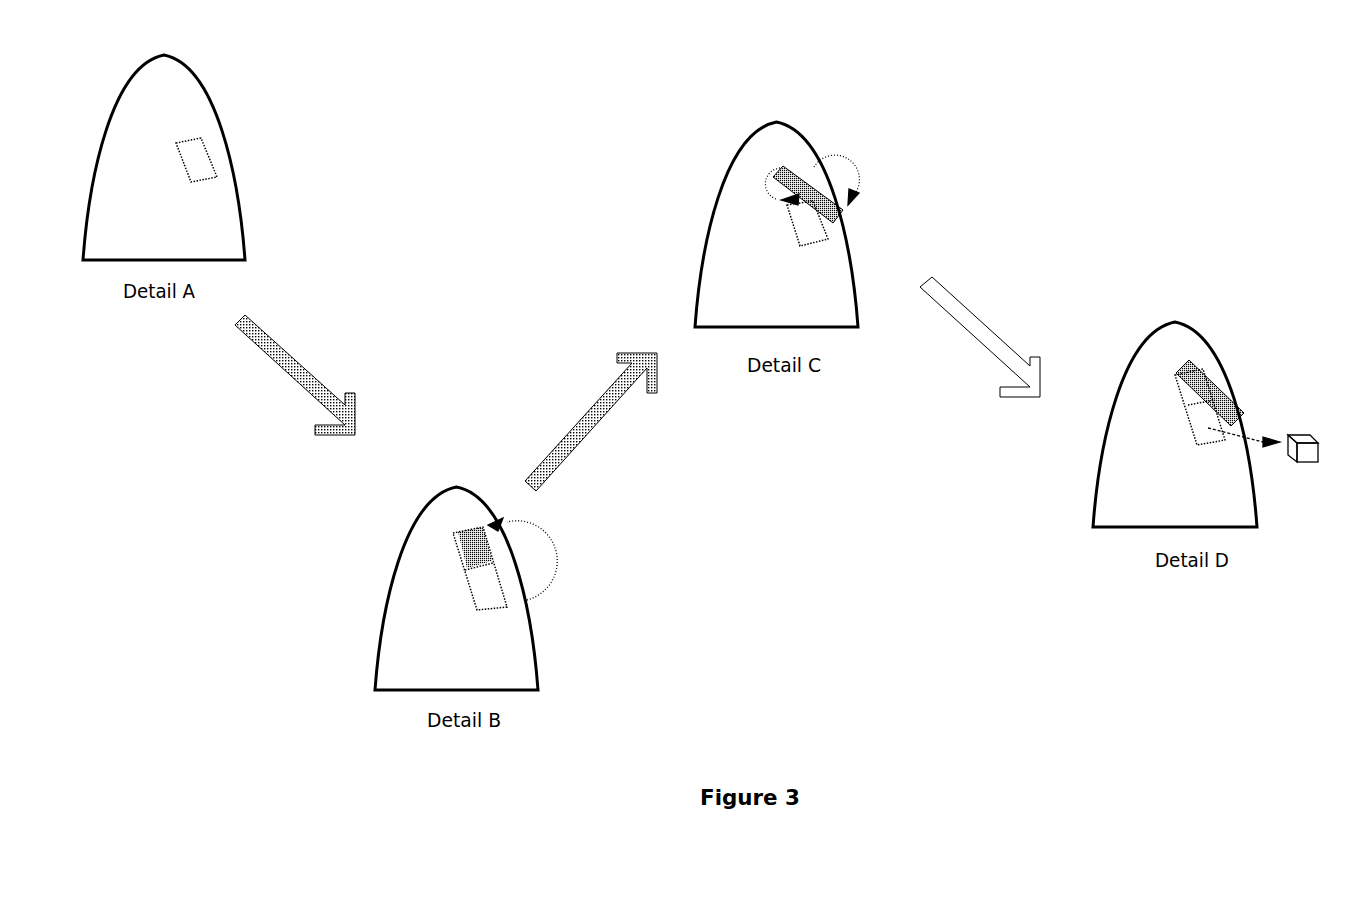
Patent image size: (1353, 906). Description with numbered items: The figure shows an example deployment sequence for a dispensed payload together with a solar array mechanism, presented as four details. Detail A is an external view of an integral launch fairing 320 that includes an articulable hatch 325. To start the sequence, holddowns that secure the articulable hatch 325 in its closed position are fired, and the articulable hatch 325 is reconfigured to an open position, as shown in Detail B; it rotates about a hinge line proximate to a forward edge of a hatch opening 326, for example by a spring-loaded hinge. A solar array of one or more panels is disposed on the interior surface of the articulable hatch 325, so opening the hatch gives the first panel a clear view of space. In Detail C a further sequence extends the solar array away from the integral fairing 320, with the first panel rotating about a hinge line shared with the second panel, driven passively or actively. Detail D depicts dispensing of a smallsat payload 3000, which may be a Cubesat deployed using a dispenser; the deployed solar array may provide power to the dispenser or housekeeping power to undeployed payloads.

The integral launch fairing 320 is at (232, 222).
The articulable hatch 325 is at (193, 151).
The hatch opening 326 is at (490, 600).
The smallsat payload 3000 is at (1330, 409).